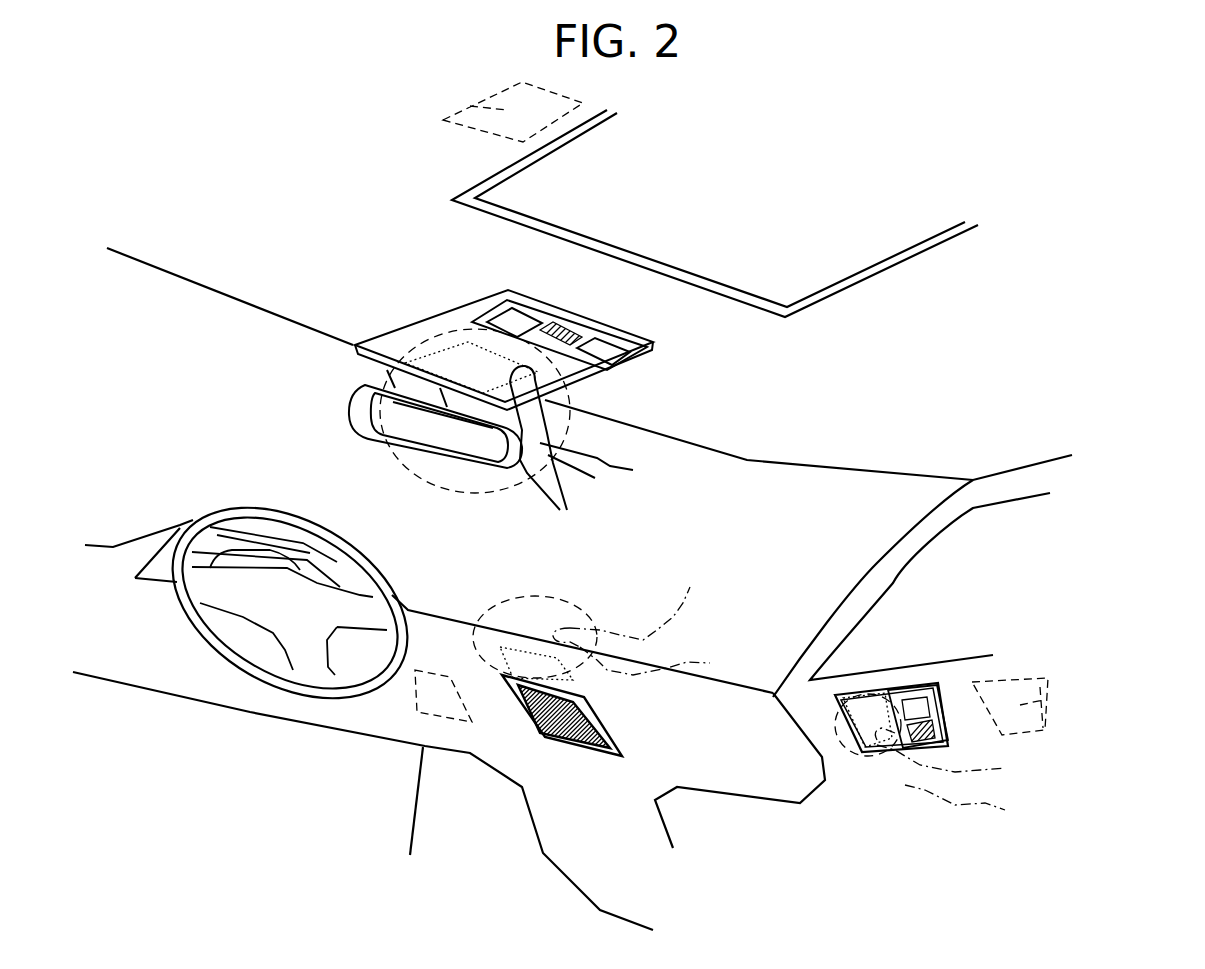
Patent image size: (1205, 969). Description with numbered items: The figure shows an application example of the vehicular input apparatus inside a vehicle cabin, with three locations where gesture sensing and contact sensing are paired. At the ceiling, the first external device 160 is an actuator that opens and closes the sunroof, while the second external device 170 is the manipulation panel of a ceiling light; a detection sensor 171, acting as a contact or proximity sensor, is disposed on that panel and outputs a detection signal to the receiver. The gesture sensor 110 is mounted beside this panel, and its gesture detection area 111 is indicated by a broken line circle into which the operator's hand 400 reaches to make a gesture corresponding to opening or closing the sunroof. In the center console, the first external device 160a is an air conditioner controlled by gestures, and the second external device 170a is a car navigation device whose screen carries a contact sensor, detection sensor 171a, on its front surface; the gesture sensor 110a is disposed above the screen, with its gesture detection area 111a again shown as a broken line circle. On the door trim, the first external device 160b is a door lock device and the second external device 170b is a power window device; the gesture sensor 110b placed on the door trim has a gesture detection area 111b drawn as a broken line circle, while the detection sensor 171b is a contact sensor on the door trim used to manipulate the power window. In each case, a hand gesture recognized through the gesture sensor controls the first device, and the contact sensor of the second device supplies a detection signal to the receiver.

The gesture sensor 110 is at (422, 350).
The gesture detection area 111 is at (417, 468).
The first external device 160 is at (470, 106).
The second external device 170 is at (655, 350).
The detection sensor 171 is at (573, 328).
The operator's hand 400 is at (597, 460).
The gesture sensor 110a is at (537, 655).
The gesture detection area 111a is at (550, 597).
The first external device 160a is at (458, 722).
The second external device 170a is at (557, 743).
The detection sensor 171a is at (600, 722).
The gesture sensor 110b is at (887, 682).
The gesture detection area 111b is at (872, 783).
The first external device 160b is at (1050, 680).
The second external device 170b is at (912, 690).
The detection sensor 171b is at (950, 730).